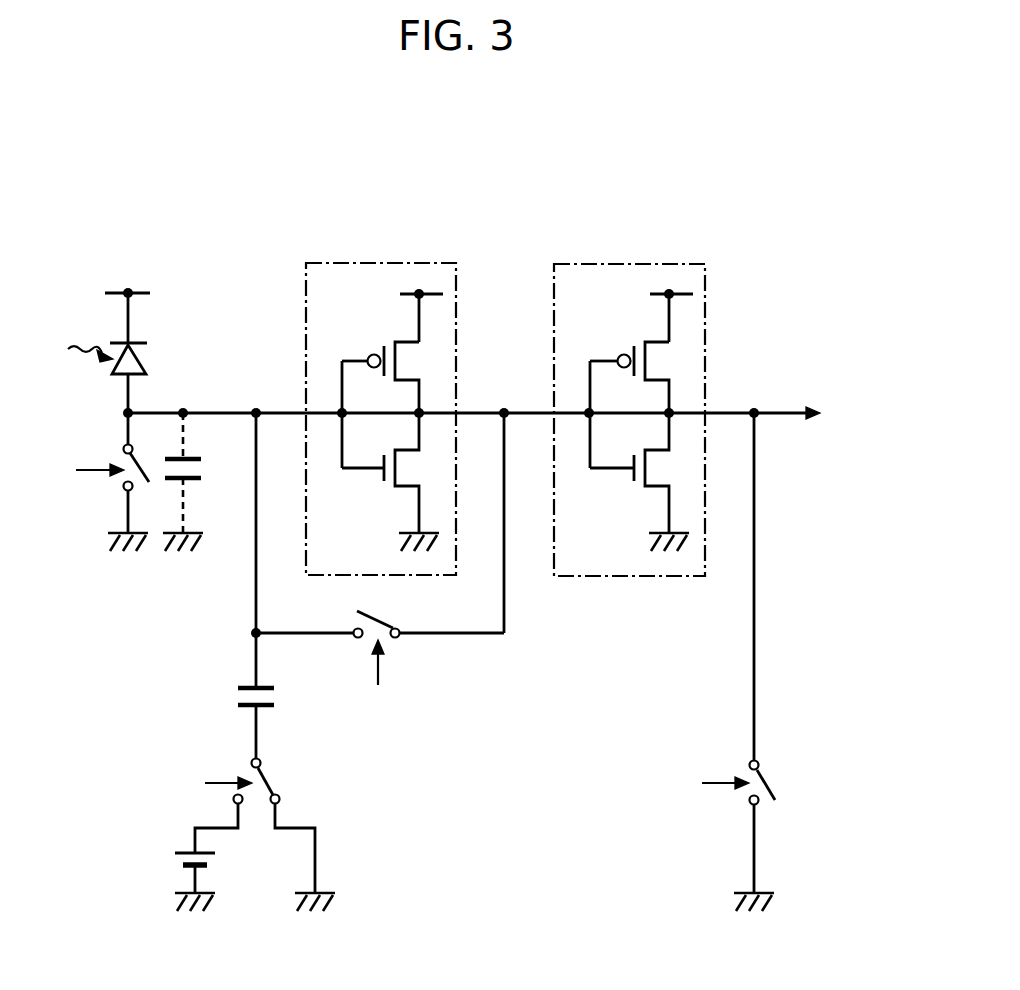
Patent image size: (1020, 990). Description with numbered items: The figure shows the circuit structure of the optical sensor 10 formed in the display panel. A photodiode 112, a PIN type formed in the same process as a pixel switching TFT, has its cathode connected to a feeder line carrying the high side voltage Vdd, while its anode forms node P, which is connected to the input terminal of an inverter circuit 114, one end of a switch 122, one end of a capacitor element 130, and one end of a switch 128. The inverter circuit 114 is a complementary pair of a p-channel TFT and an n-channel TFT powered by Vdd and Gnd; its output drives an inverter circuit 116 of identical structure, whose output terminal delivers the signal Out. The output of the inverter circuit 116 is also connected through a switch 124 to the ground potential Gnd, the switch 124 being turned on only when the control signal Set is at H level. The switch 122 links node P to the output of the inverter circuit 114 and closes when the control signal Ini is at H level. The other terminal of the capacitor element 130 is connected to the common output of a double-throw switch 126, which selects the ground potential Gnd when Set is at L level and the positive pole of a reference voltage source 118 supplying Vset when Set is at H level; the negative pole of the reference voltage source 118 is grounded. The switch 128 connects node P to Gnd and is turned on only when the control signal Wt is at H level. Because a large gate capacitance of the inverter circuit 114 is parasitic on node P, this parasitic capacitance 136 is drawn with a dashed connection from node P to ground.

The optical sensor 10 is at (340, 185).
The photodiode 112 is at (120, 378).
The inverter circuit 114 is at (421, 262).
The inverter circuit 116 is at (671, 262).
The reference voltage source 118 is at (174, 855).
The switch 122 is at (392, 643).
The switch 124 is at (774, 786).
The switch 126 is at (271, 789).
The switch 128 is at (122, 487).
The capacitor element 130 is at (248, 686).
The parasitic capacitance 136 is at (197, 482).